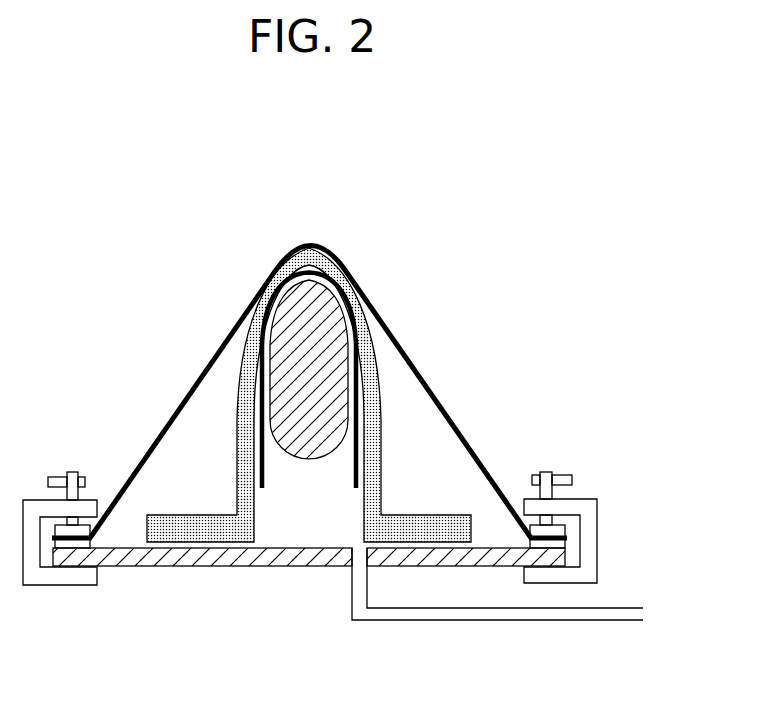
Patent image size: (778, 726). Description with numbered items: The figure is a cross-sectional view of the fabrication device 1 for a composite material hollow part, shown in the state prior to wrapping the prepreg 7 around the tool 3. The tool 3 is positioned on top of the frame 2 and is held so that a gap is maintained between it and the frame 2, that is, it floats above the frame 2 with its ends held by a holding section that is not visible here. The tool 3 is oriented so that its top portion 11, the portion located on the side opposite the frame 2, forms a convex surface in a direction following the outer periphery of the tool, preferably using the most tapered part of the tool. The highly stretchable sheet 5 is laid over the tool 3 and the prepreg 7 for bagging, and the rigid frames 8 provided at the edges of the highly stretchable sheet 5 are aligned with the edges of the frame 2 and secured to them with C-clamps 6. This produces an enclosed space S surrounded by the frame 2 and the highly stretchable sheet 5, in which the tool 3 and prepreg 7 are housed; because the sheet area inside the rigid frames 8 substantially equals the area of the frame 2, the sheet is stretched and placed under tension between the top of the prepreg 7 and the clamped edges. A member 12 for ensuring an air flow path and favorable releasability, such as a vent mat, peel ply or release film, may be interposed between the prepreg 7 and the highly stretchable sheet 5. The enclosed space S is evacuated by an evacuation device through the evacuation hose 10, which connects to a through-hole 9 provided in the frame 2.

The fabrication device 1 is at (97, 254).
The frame 2 is at (154, 556).
The tool 3 is at (333, 452).
The highly stretchable sheet 5 is at (415, 370).
The C-clamps 6 is at (585, 510).
The prepreg 7 is at (260, 470).
The rigid frames 8 is at (565, 529).
The through-hole 9 is at (358, 562).
The evacuation hose 10 is at (488, 615).
The top portion 11 is at (311, 284).
The member for ensuring an air flow path and favorable releasability 12 is at (243, 477).
The enclosed space S is at (422, 448).